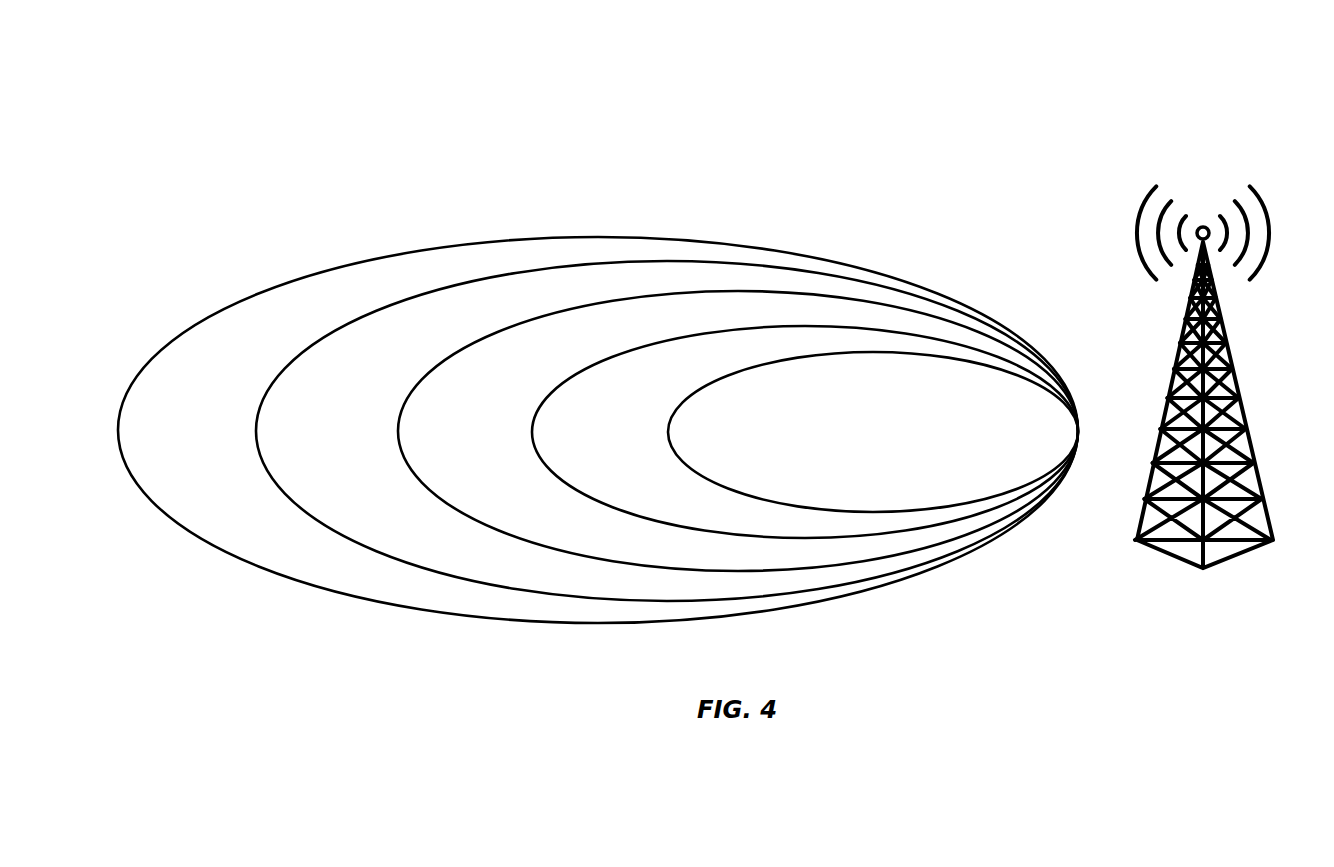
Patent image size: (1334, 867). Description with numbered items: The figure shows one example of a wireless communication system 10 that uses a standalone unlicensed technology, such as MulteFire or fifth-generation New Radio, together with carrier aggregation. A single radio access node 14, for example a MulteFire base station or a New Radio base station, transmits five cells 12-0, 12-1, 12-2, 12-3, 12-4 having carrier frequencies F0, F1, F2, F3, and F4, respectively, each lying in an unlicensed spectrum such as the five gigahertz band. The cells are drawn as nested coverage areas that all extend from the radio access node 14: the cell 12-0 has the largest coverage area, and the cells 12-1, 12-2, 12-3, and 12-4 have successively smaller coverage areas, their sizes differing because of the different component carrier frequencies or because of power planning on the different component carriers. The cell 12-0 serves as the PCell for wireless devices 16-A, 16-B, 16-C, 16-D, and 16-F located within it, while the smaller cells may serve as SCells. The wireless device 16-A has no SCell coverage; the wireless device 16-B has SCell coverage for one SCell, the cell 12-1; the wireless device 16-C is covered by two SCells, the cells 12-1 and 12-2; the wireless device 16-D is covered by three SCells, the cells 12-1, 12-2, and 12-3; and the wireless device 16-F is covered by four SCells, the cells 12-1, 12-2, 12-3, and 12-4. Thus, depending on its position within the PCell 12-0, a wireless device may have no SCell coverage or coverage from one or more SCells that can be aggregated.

The wireless communication system 10 is at (1092, 93).
The cell 12-0 is at (752, 247).
The cell 12-1 is at (805, 271).
The cell 12-2 is at (858, 300).
The cell 12-3 is at (915, 335).
The cell 12-4 is at (970, 361).
The radio access node 14 is at (1242, 413).
The wireless device 16-A is at (189, 431).
The wireless device 16-B is at (327, 431).
The wireless device 16-C is at (463, 431).
The wireless device 16-D is at (600, 431).
The wireless device 16-F is at (791, 431).